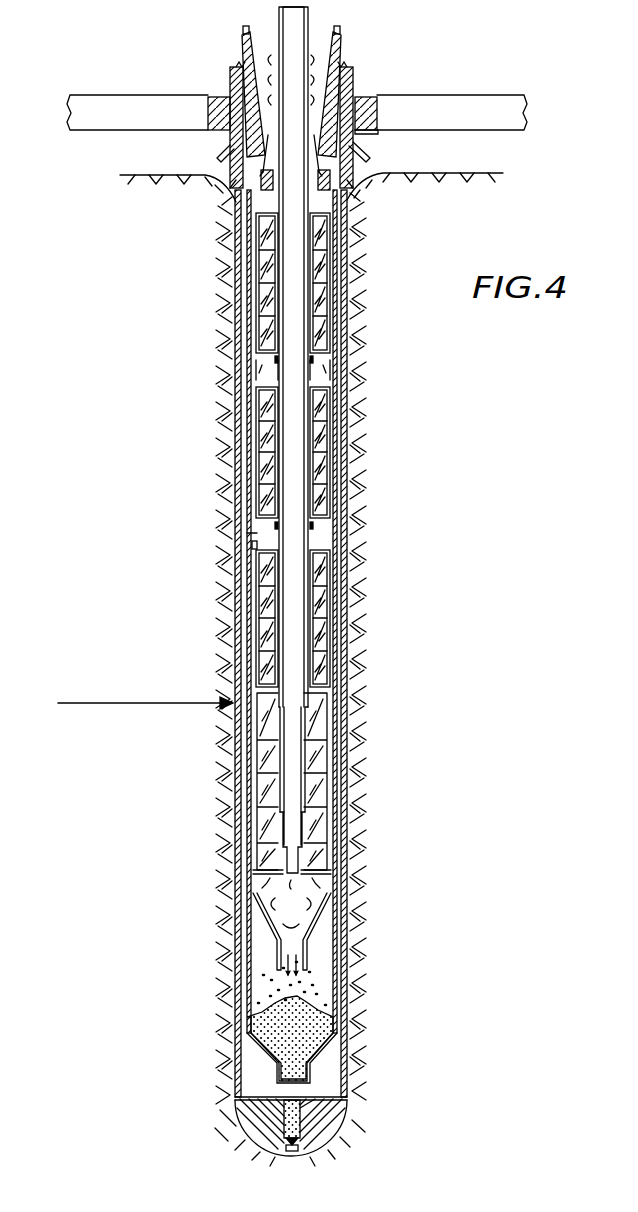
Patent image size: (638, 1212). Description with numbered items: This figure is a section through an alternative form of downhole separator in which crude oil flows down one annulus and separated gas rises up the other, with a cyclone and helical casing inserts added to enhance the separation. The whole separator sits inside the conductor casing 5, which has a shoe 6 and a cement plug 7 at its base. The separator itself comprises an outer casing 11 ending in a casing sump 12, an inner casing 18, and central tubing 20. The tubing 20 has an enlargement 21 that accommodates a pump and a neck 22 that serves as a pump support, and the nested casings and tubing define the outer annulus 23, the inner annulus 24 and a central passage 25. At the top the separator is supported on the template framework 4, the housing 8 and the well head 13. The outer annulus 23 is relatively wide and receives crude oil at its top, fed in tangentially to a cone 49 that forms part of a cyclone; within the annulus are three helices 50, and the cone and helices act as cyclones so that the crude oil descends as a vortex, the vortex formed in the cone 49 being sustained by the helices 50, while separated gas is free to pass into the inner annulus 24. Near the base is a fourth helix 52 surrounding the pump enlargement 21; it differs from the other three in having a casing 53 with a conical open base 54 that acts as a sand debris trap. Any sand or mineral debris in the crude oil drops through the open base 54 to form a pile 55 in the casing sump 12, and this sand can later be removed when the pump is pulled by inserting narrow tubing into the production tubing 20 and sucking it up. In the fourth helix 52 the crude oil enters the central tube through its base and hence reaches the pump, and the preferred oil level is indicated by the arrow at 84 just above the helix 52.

The template framework 4 is at (67, 112).
The conductor casing 5 is at (345, 250).
The shoe 6 is at (318, 1122).
The cement plug 7 is at (268, 1108).
The housing 8 is at (232, 85).
The outer casing 11 is at (336, 298).
The casing sump 12 is at (310, 1078).
The well head 13 is at (246, 58).
The inner casing 18 is at (316, 380).
The central tubing 20 is at (301, 484).
The enlargement 21 is at (308, 727).
The neck 22 is at (300, 825).
The outer annulus 23 is at (257, 546).
The inner annulus 24 is at (257, 535).
The central passage 25 is at (293, 542).
The cone 49 is at (250, 50).
The helices 50 is at (257, 266).
The fourth helix 52 is at (258, 775).
The casing 53 is at (258, 866).
The conical open base 54 is at (265, 922).
The pile 55 is at (305, 1030).
The oil level 84 is at (110, 703).